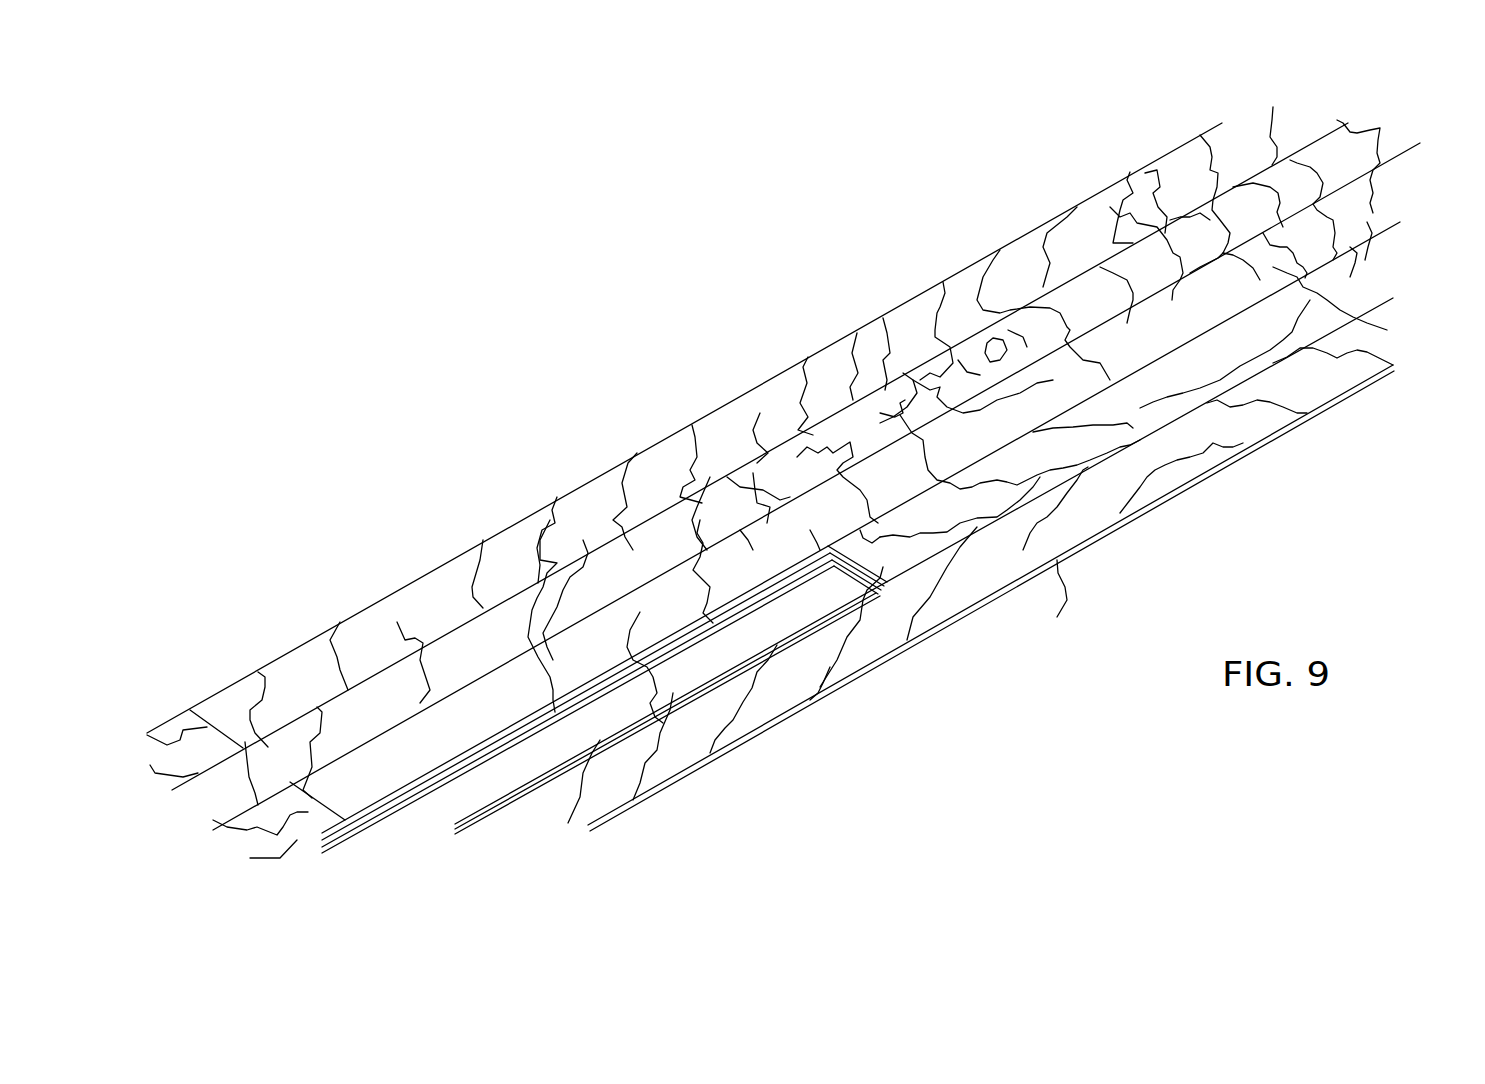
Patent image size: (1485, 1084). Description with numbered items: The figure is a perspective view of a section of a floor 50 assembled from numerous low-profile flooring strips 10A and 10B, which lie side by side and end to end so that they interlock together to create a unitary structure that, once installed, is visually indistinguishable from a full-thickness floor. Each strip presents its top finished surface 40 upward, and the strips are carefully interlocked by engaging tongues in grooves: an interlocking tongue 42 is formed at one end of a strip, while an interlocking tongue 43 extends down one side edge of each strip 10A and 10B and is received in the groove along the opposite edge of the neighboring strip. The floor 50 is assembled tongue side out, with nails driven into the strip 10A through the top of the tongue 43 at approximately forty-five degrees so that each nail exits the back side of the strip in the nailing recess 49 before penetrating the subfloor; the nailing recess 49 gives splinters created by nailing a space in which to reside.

The flooring strip 10A is at (782, 479).
The flooring strip 10B is at (806, 463).
The top finished surface 40 is at (861, 537).
The interlocking tongue 42 is at (831, 583).
The interlocking tongue 43 is at (667, 713).
The nailing recess 49 is at (991, 598).
The floor 50 is at (924, 240).